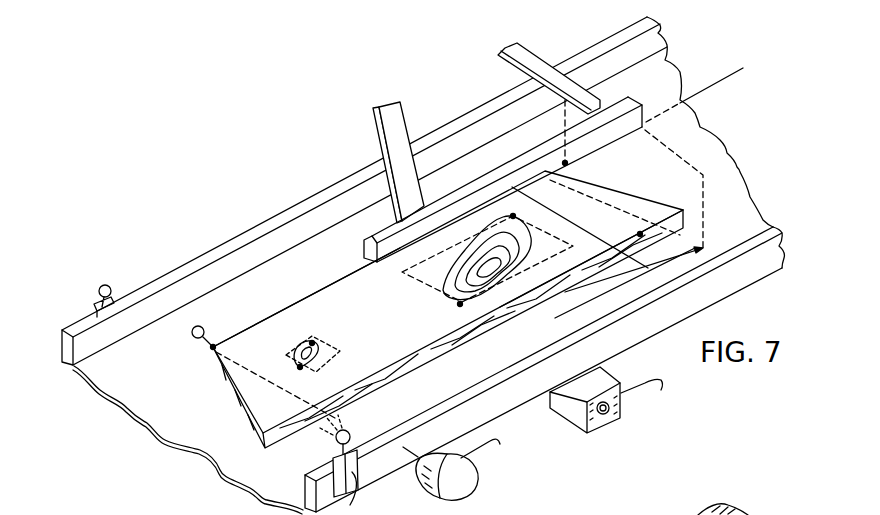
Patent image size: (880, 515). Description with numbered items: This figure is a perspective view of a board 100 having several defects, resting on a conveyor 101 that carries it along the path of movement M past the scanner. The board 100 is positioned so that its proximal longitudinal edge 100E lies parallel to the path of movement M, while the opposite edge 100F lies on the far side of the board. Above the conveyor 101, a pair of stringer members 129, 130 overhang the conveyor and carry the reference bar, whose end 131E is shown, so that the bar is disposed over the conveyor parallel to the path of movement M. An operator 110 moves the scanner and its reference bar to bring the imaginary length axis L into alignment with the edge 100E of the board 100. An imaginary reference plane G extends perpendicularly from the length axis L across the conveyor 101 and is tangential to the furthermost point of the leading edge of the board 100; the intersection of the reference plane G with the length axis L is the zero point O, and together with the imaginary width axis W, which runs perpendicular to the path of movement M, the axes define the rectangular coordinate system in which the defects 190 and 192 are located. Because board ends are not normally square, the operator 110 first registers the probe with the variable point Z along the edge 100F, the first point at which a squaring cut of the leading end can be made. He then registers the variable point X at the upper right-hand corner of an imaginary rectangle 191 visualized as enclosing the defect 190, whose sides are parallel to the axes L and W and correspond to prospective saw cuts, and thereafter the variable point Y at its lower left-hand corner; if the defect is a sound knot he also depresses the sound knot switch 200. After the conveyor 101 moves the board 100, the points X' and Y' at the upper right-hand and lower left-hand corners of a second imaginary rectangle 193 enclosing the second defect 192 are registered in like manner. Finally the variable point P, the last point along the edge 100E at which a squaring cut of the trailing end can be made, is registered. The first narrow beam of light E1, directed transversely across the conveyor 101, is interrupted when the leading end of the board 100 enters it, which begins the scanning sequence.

The board 100 is at (372, 331).
The edge of the board 100E is at (288, 308).
The opposite edge of the board 100F is at (548, 304).
The conveyor 101 is at (475, 376).
The operator 110 is at (458, 487).
The stringer member 129 is at (394, 103).
The stringer member 130 is at (516, 44).
The end of guide bar 131E is at (620, 127).
The defect 190 is at (458, 265).
The imaginary rectangle 191 is at (548, 233).
The second defect 192 is at (290, 356).
The imaginary rectangle 193 is at (325, 363).
The sound knot switch 200 is at (621, 412).
The zero point O is at (568, 163).
The imaginary reference plane G is at (704, 204).
The imaginary length axis L is at (745, 69).
The path of movement M is at (625, 283).
The variable point P is at (255, 441).
The variable point X is at (525, 204).
The variable point Y is at (450, 313).
The variable point Z is at (638, 234).
The imaginary width axis W is at (634, 269).
The variable point X' is at (302, 332).
The variable point Y' is at (309, 377).
The first narrow beam of light E1 is at (338, 426).